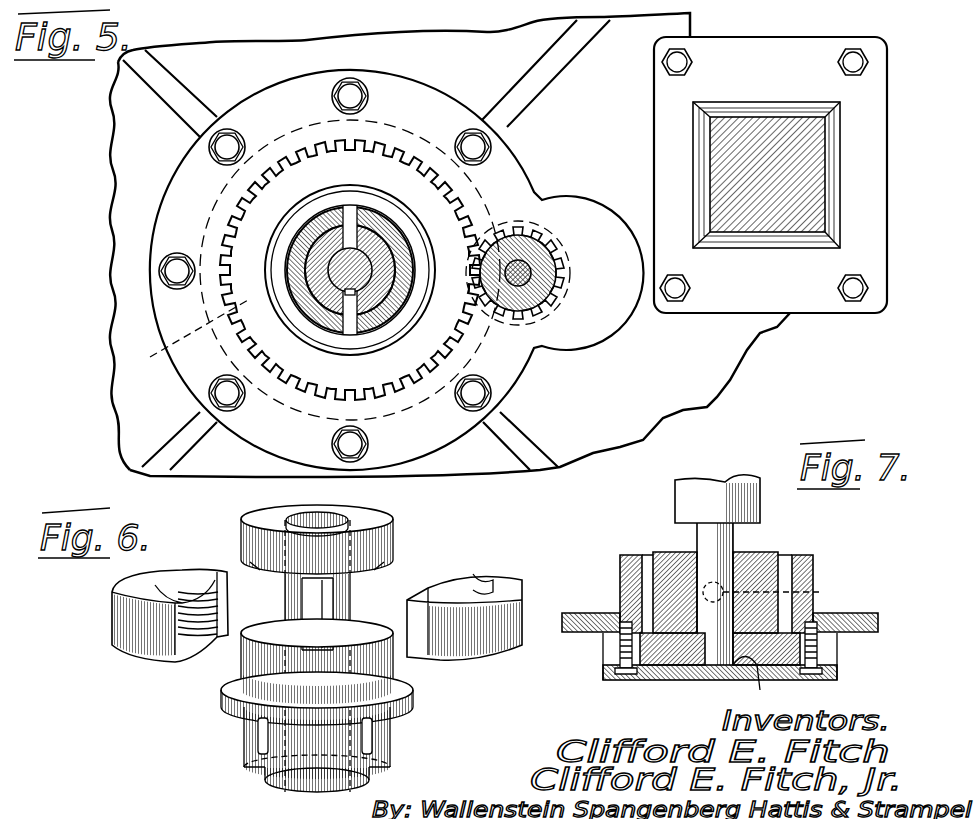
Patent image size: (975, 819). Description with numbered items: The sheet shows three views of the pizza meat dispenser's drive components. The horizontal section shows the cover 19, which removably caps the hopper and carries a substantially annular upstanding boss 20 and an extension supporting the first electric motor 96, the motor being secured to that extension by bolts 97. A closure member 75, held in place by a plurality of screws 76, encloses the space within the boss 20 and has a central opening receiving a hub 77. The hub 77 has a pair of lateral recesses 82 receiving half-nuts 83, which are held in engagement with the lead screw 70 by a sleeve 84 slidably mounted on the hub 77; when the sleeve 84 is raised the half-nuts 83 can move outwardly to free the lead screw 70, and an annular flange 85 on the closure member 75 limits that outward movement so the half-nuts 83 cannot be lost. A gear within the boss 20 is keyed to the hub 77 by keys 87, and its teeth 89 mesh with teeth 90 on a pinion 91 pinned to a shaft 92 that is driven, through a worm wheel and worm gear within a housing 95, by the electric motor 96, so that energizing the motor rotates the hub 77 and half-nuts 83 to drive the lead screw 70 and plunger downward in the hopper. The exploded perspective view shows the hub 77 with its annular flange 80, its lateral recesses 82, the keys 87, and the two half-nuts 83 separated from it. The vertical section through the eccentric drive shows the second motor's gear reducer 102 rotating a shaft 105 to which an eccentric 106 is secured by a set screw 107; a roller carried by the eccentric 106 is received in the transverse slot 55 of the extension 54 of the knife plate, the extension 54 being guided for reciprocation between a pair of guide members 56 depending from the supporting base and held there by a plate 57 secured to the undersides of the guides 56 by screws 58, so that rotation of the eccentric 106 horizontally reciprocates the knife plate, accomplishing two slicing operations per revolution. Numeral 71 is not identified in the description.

In FIG. 5, the cover 19 is at (116, 137).
In FIG. 5, the annular upstanding boss 20 is at (433, 90).
In FIG. 5, the lead screw 70 is at (347, 222).
In FIG. 5, the shaft bore 71 is at (328, 272).
In FIG. 5, the closure member 75 is at (515, 185).
In FIG. 5, the screws 76 is at (352, 94).
In FIG. 5, the half-nuts 83 is at (305, 236).
In FIG. 6, the half-nuts 83 is at (113, 635).
In FIG. 5, the sleeve 84 is at (290, 293).
In FIG. 5, the annular flange 85 is at (330, 356).
In FIG. 5, the teeth 89 is at (317, 270).
In FIG. 5, the teeth 90 is at (548, 234).
In FIG. 5, the pinion 91 is at (545, 265).
In FIG. 5, the shaft 92 is at (545, 305).
In FIG. 5, the housing 95 is at (800, 38).
In FIG. 5, the electric motor 96 is at (745, 50).
In FIG. 5, the bolts 97 is at (665, 68).
In FIG. 6, the hub 77 is at (255, 660).
In FIG. 6, the annular flange 80 is at (414, 698).
In FIG. 6, the lateral recesses 82 is at (255, 578).
In FIG. 6, the keys 87 is at (255, 744).
In FIG. 7, the gear reducer 102 is at (690, 508).
In FIG. 7, the shaft 105 is at (705, 537).
In FIG. 7, the eccentric 106 is at (757, 555).
In FIG. 7, the set screw 107 is at (720, 594).
In FIG. 7, the extension 54 is at (694, 652).
In FIG. 7, the transverse slot 55 is at (752, 684).
In FIG. 7, the guide members 56 is at (604, 652).
In FIG. 7, the plate 57 is at (640, 680).
In FIG. 7, the screws 58 is at (615, 668).